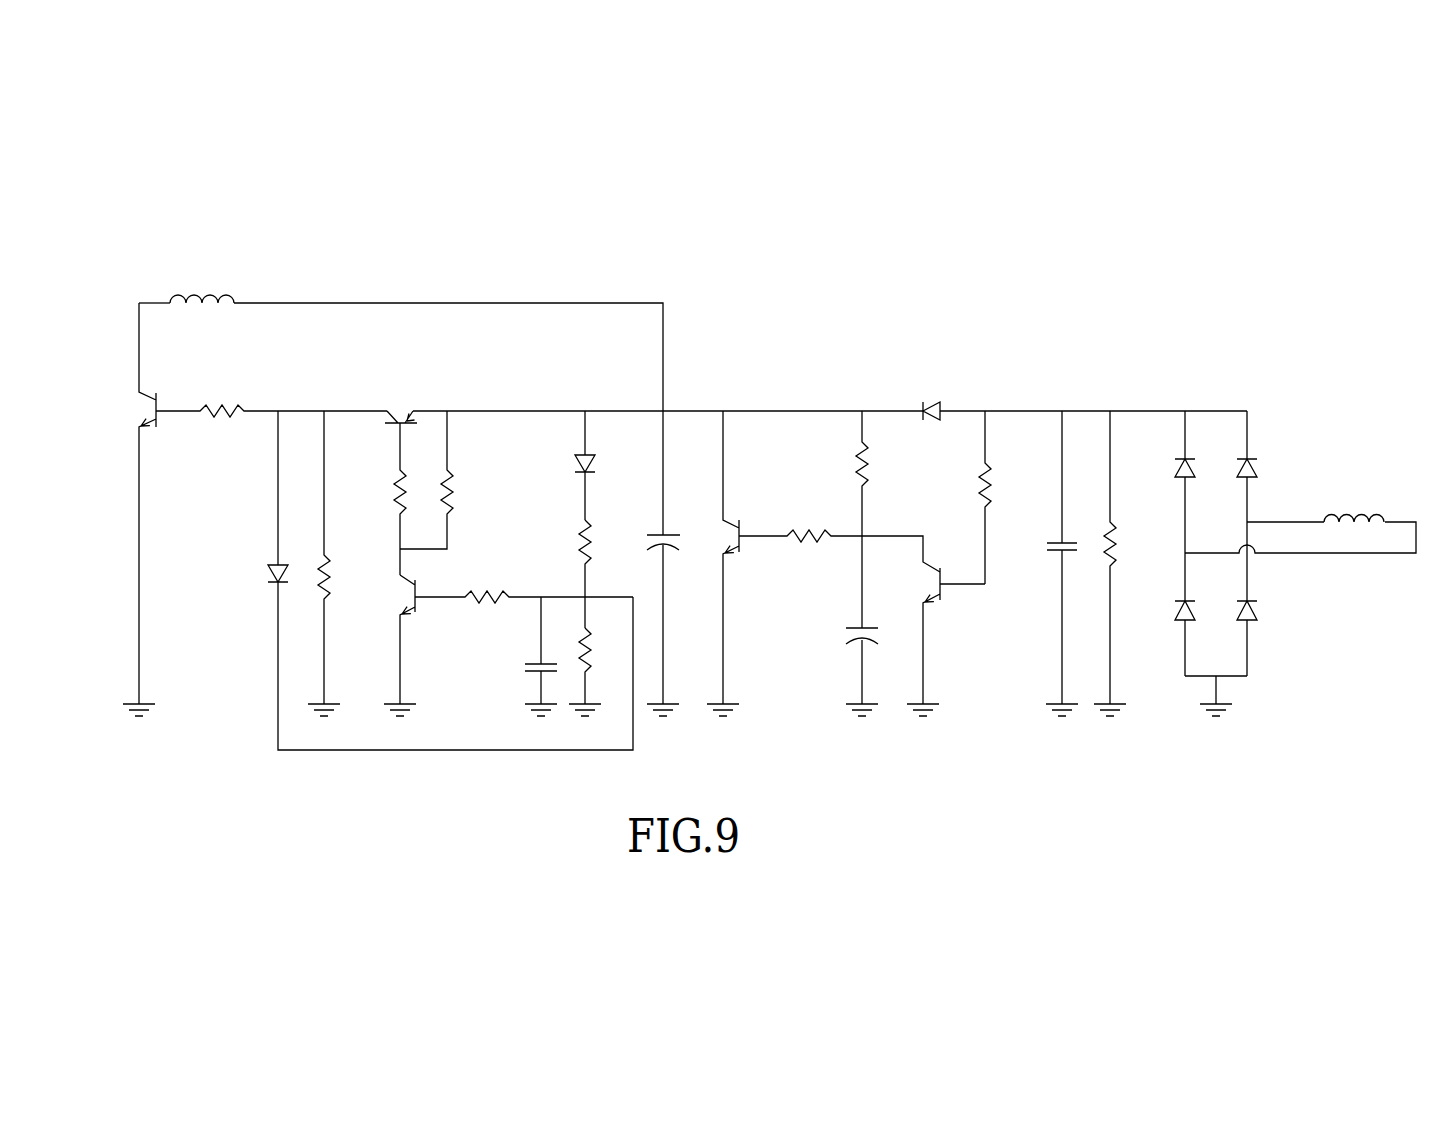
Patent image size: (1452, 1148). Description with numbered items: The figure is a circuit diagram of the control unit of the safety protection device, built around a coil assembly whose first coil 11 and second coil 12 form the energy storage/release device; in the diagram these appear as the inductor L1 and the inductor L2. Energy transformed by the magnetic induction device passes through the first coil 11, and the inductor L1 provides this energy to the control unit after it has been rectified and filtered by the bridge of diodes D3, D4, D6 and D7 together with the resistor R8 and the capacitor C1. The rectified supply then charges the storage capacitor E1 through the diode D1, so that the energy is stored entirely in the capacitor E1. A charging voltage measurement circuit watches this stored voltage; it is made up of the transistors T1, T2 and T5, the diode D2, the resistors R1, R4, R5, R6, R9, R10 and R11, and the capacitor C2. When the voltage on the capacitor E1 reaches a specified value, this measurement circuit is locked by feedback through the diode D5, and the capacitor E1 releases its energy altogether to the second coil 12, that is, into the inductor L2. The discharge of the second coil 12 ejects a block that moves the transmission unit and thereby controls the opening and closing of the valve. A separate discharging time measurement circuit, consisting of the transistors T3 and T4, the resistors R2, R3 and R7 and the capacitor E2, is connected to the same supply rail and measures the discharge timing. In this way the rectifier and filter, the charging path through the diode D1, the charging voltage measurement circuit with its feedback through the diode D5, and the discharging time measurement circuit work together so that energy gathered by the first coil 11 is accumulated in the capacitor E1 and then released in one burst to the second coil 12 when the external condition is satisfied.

The second coil 12 is at (235, 223).
The first coil 11 is at (1387, 444).
The first coil (inductor L1) L1 is at (1354, 495).
The second coil (inductor L2) L2 is at (202, 277).
The resistor R1 is at (271, 387).
The resistor R2 is at (875, 519).
The resistor R3 is at (998, 497).
The resistor R4 is at (382, 499).
The resistor R5 is at (441, 480).
The resistor R6 is at (569, 574).
The resistor R7 is at (839, 537).
The resistor R8 is at (1125, 557).
The resistor R9 is at (340, 557).
The resistor R10 is at (524, 579).
The resistor R11 is at (604, 666).
The transistor T1 is at (157, 503).
The transistor T2 is at (401, 390).
The transistor T3 is at (740, 557).
The transistor T4 is at (954, 636).
The transistor T5 is at (417, 639).
The diode D1 is at (937, 394).
The diode D2 is at (567, 465).
The diode D3 is at (1168, 482).
The diode D4 is at (1267, 466).
The diode D5 is at (435, 580).
The diode D6 is at (1166, 614).
The diode D7 is at (1263, 599).
The capacitor C1 is at (1047, 557).
The capacitor C2 is at (521, 650).
The capacitor E1 is at (654, 527).
The capacitor E2 is at (852, 649).